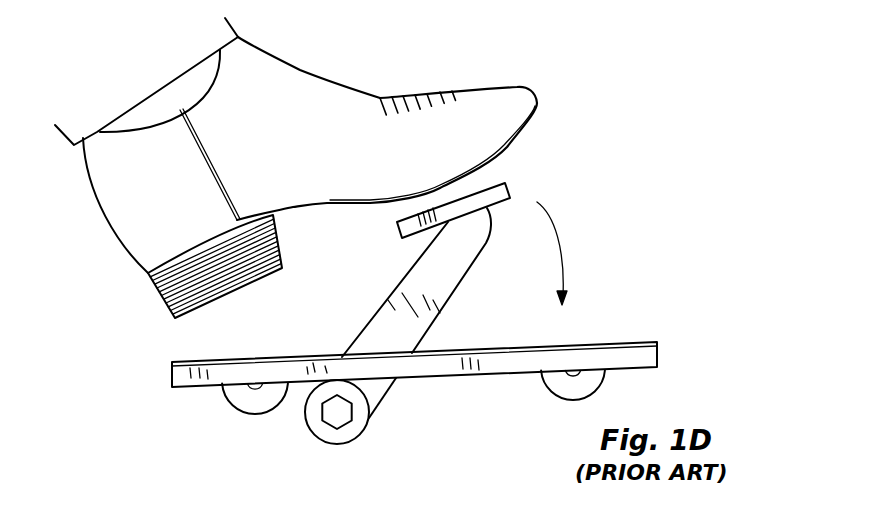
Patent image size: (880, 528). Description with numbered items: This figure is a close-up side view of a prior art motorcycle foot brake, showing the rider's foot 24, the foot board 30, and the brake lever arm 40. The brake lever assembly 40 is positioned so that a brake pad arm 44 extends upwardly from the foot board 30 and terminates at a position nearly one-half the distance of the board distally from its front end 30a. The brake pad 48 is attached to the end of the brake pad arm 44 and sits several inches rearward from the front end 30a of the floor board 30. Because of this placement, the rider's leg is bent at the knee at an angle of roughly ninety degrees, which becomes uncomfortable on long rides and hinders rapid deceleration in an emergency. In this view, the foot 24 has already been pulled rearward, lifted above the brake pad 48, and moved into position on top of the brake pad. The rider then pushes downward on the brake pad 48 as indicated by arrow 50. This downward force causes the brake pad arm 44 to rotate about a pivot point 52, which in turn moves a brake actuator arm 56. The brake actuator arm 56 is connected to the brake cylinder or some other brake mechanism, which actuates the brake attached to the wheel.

The rider's foot 24 is at (278, 78).
The brake pad 48 is at (509, 191).
The brake pad arm 44 is at (468, 238).
The brake lever arm 40 is at (460, 285).
The arrow 50 is at (562, 243).
The brake actuator arm 56 is at (313, 363).
The pivot point 52 is at (348, 428).
The foot board 30 is at (568, 392).
The front end of the foot board 30a is at (658, 353).